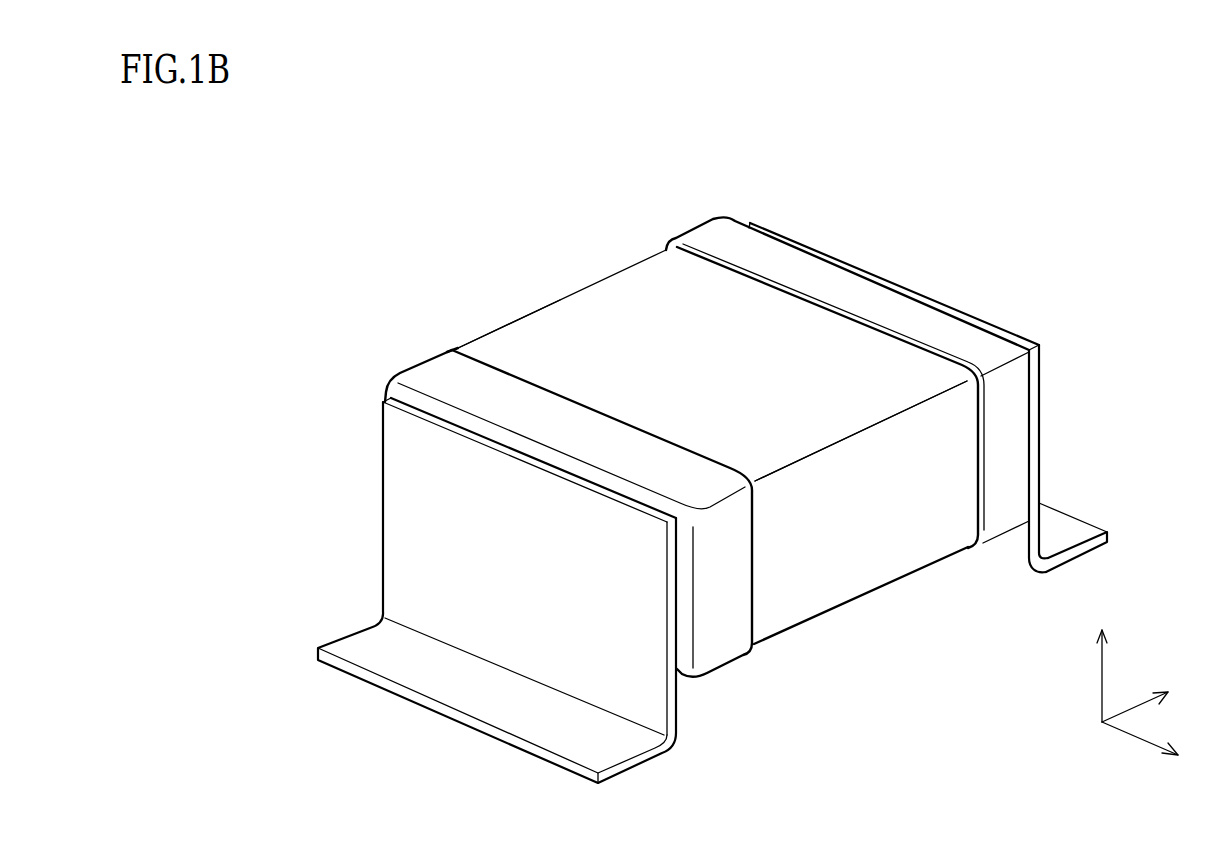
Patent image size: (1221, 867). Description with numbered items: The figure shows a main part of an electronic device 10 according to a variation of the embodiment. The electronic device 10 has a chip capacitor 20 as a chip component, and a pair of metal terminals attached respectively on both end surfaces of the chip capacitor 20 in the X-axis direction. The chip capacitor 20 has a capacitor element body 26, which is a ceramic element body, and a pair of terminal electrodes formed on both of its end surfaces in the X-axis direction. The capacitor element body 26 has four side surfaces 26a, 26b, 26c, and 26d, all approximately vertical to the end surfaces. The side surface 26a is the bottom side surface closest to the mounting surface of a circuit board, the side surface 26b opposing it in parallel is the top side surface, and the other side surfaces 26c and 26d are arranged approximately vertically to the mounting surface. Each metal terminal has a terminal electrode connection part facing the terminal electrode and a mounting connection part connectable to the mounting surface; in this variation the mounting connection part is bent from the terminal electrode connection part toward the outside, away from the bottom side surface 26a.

The electronic device 10 is at (520, 291).
The chip capacitor 20 is at (637, 292).
The capacitor element body 26 is at (722, 305).
The bottom side surface 26a is at (817, 613).
The top side surface 26b is at (572, 326).
The side surface 26c is at (823, 548).
The side surface 26d is at (497, 332).